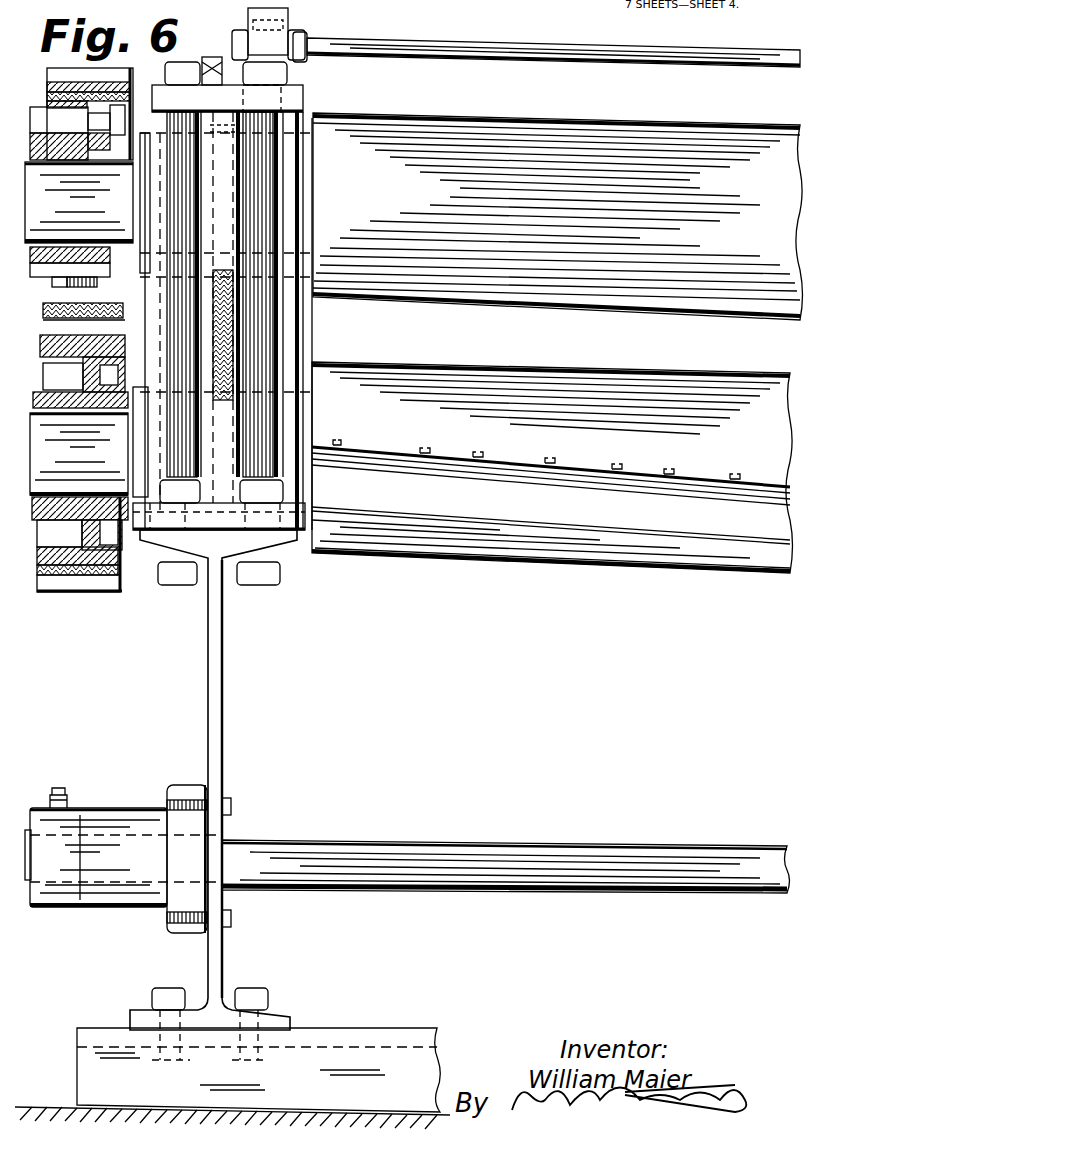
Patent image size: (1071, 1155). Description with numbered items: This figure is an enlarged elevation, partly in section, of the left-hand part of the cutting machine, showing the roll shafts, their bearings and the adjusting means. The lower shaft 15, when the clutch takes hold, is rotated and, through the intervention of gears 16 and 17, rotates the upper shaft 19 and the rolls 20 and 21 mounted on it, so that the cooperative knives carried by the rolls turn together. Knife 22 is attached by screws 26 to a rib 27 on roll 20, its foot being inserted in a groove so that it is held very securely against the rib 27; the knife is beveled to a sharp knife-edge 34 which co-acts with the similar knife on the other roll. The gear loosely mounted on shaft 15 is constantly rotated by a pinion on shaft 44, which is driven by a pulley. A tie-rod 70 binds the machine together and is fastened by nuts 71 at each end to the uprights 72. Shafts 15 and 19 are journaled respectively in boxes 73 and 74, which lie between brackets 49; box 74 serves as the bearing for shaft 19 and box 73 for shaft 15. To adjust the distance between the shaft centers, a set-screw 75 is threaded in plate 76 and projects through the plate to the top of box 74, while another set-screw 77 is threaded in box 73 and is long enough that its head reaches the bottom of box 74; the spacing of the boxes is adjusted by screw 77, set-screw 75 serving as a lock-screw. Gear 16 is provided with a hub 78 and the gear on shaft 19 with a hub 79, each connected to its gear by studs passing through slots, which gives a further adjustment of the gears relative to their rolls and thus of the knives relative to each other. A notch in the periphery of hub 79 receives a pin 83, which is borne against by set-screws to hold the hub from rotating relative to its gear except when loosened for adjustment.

The shaft 15 is at (28, 478).
The gear 16 is at (30, 360).
The gear 17 is at (60, 70).
The shaft 19 is at (25, 265).
The roll 20 is at (552, 467).
The roll 21 is at (558, 216).
The knife 22 is at (605, 483).
The screws 26 is at (475, 452).
The rib 27 is at (538, 520).
The knife-edge 34 is at (720, 485).
The shaft 44 is at (528, 845).
The brackets 49 is at (218, 485).
The tie-rod 70 is at (578, 52).
The nuts 71 is at (244, 32).
The uprights 72 is at (277, 25).
The box 73 is at (305, 480).
The box 74 is at (303, 170).
The set-screw 75 is at (220, 65).
The plate 76 is at (333, 407).
The set-screw 77 is at (195, 331).
The hub 78 is at (124, 485).
The hub 79 is at (33, 178).
The pin 83 is at (77, 132).